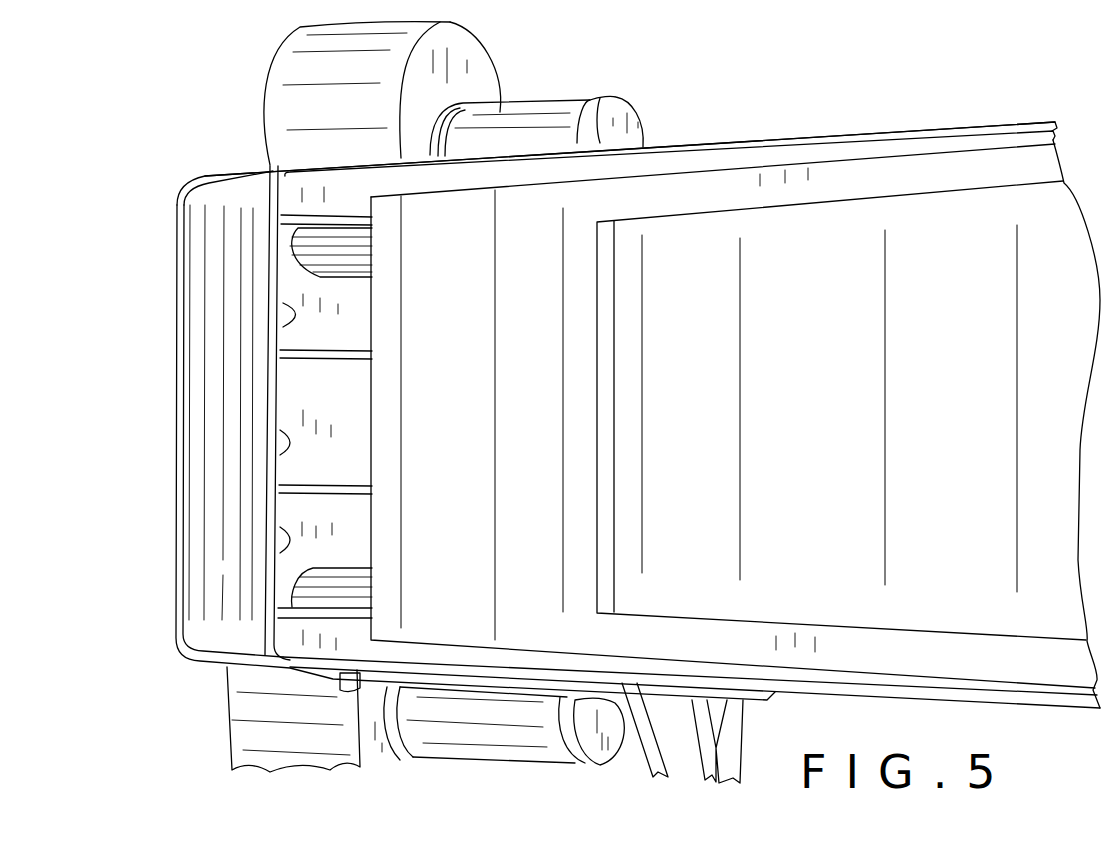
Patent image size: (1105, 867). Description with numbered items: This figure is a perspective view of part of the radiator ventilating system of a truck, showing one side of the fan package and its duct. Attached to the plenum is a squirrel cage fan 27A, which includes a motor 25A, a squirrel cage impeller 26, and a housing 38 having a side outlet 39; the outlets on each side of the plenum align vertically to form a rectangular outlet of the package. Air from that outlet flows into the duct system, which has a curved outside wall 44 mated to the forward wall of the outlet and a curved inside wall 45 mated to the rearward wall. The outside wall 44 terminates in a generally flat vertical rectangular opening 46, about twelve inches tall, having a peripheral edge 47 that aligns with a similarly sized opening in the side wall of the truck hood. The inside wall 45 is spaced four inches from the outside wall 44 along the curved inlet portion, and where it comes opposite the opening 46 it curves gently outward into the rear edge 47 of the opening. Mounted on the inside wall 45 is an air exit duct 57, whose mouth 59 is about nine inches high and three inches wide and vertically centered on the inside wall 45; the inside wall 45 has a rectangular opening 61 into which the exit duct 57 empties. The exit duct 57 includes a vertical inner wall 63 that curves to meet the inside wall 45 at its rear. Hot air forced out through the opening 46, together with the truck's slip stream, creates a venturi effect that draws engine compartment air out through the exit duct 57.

The motor 25A is at (528, 117).
The squirrel cage impeller 26 is at (320, 252).
The squirrel cage fan 27A is at (320, 93).
The housing 38 is at (298, 80).
The side outlet 39 is at (302, 315).
The curved outside wall 44 is at (230, 432).
The curved inside wall 45 is at (461, 617).
The rectangular opening 46 is at (702, 150).
The peripheral edge 47 is at (785, 140).
The air exit duct 57 is at (873, 263).
The mouth 59 is at (607, 440).
The rectangular opening 61 is at (1017, 187).
The vertical inner wall 63 is at (955, 275).